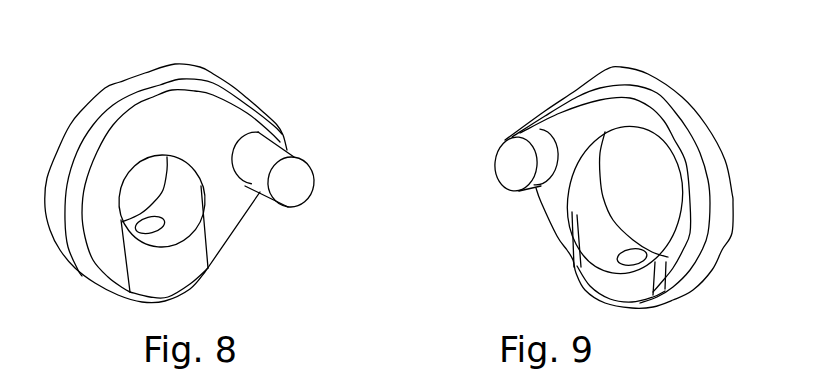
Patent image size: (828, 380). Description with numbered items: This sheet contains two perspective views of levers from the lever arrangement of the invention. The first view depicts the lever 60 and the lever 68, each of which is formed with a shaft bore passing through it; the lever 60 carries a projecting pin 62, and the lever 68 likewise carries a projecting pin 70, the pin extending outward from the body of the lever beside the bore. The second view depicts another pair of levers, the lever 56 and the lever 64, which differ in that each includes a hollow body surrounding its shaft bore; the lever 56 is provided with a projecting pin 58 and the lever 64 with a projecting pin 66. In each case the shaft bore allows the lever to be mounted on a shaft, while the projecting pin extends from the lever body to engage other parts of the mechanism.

In FIG. 8, the lever 60 is at (154, 162).
In FIG. 8, the lever 68 is at (133, 85).
In FIG. 8, the projecting pin 62 is at (308, 201).
In FIG. 8, the projecting pin 70 is at (287, 193).
In FIG. 9, the lever 56 is at (646, 174).
In FIG. 9, the lever 64 is at (652, 88).
In FIG. 9, the projecting pin 58 is at (470, 139).
In FIG. 9, the projecting pin 66 is at (506, 150).